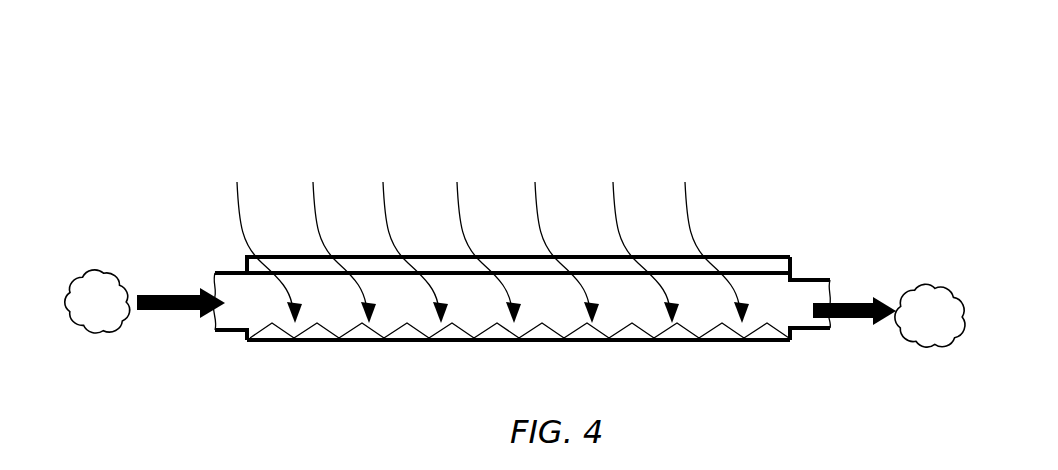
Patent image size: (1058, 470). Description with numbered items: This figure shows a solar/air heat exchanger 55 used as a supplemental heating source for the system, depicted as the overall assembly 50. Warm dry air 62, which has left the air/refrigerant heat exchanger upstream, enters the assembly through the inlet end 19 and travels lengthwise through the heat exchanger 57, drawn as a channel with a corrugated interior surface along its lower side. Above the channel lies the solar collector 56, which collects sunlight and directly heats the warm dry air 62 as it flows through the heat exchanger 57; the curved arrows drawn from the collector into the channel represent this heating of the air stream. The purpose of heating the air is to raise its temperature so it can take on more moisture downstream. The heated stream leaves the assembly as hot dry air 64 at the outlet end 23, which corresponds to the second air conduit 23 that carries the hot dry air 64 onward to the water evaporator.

The heat exchanger assembly 50 is at (218, 91).
The solar/air heat exchanger 55 is at (582, 169).
The solar collector 56 is at (733, 257).
The heat exchanger 57 is at (619, 350).
The inlet 19 is at (228, 352).
The second air conduit 23 is at (806, 352).
The warm dry air 62 is at (132, 285).
The hot dry air 64 is at (920, 290).